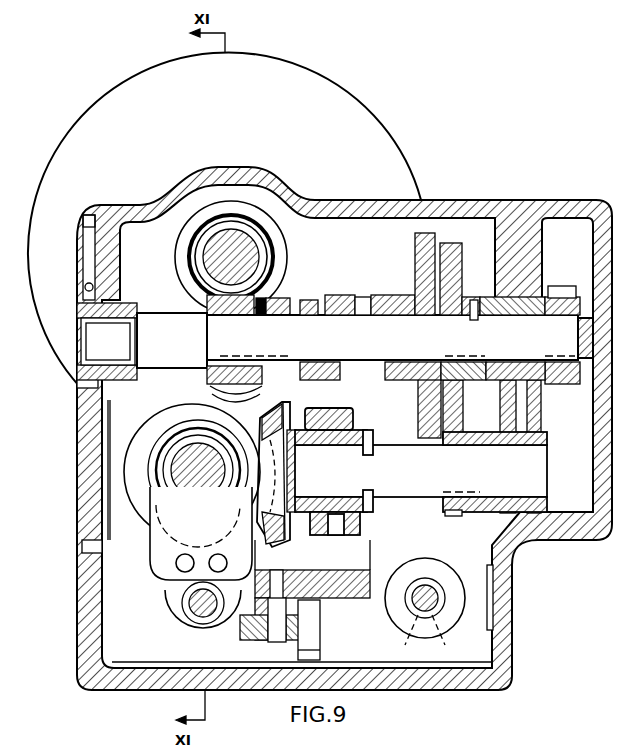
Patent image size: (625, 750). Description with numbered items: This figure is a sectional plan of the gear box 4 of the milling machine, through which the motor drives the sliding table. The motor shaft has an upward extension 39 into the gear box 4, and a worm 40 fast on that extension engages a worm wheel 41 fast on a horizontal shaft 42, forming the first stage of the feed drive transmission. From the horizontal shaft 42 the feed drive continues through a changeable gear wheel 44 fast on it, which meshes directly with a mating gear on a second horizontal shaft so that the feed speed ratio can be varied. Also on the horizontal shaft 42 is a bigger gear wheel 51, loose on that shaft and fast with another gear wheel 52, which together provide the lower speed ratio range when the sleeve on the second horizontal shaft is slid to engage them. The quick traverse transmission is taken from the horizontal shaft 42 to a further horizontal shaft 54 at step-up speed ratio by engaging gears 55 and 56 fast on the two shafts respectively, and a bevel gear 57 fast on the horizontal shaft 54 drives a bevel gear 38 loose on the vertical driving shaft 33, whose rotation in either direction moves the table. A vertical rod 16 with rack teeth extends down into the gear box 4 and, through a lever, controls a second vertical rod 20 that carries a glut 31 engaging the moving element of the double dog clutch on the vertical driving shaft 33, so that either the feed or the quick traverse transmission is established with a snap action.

The gear box 4 is at (80, 587).
The vertical rod 16 is at (435, 600).
The second vertical rod 20 is at (185, 605).
The glut 31 is at (175, 540).
The vertical driving shaft 33 is at (189, 479).
The bevel gear 38 is at (142, 440).
The motor shaft extension 39 is at (241, 266).
The worm 40 is at (178, 252).
The worm wheel 41 is at (207, 378).
The horizontal shaft 42 is at (402, 346).
The gear wheel 44 is at (557, 287).
The bigger gear wheel 51 is at (413, 252).
The gear wheel 52 is at (306, 296).
The horizontal shaft 54 is at (375, 478).
The gear 55 is at (455, 247).
The gear 56 is at (452, 513).
The bevel gear 57 is at (292, 413).